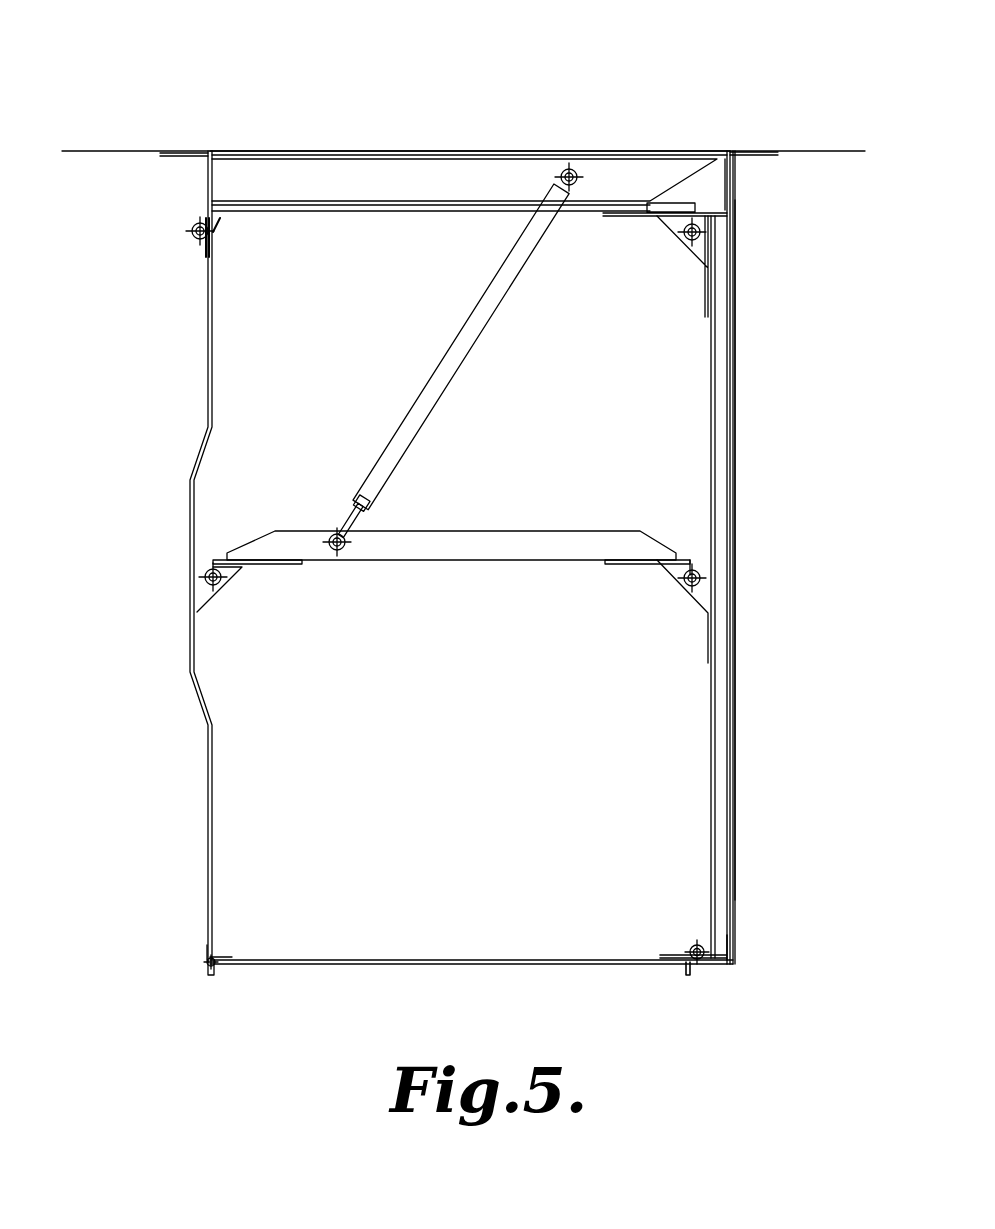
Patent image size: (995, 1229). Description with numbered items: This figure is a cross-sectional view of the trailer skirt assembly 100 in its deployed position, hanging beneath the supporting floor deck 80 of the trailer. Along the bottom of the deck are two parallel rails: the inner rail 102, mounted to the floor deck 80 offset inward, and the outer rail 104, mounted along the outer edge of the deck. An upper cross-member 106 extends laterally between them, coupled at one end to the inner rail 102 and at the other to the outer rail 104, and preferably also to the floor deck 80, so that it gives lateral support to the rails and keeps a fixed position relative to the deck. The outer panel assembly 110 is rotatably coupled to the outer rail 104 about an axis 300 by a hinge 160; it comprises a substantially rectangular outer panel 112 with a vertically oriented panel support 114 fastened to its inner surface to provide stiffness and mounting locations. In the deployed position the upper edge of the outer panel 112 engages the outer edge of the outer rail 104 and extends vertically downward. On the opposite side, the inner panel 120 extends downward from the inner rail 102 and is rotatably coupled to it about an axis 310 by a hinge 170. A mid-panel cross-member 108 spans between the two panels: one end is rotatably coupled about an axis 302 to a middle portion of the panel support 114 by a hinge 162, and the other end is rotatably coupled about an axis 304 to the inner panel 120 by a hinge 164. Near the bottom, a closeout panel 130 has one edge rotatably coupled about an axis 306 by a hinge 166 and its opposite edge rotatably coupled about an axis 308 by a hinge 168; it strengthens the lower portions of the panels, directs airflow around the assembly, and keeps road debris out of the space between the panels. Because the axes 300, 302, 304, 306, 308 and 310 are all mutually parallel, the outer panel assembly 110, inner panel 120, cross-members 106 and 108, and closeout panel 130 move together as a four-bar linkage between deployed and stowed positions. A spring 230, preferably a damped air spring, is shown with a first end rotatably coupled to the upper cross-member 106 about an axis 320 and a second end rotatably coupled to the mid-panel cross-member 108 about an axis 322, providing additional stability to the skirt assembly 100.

The supporting floor deck 80 is at (104, 152).
The skirt assembly 100 is at (176, 54).
The inner rail 102 is at (178, 150).
The outer rail 104 is at (760, 150).
The upper cross-member 106 is at (400, 150).
The mid-panel cross-member 108 is at (542, 558).
The outer panel assembly 110 is at (740, 350).
The outer panel 112 is at (735, 451).
The panel support 114 is at (713, 384).
The inner panel 120 is at (203, 446).
The closeout panel 130 is at (600, 965).
The hinge 160 is at (668, 222).
The hinge 162 is at (688, 558).
The hinge 164 is at (238, 573).
The hinge 166 is at (668, 958).
The hinge 168 is at (207, 947).
The hinge 170 is at (205, 252).
The spring 230 is at (453, 353).
The axis 300 is at (703, 233).
The axis 302 is at (705, 576).
The axis 304 is at (200, 576).
The axis 306 is at (702, 950).
The axis 308 is at (207, 968).
The axis 310 is at (192, 230).
The axis 320 is at (575, 170).
The axis 322 is at (334, 532).